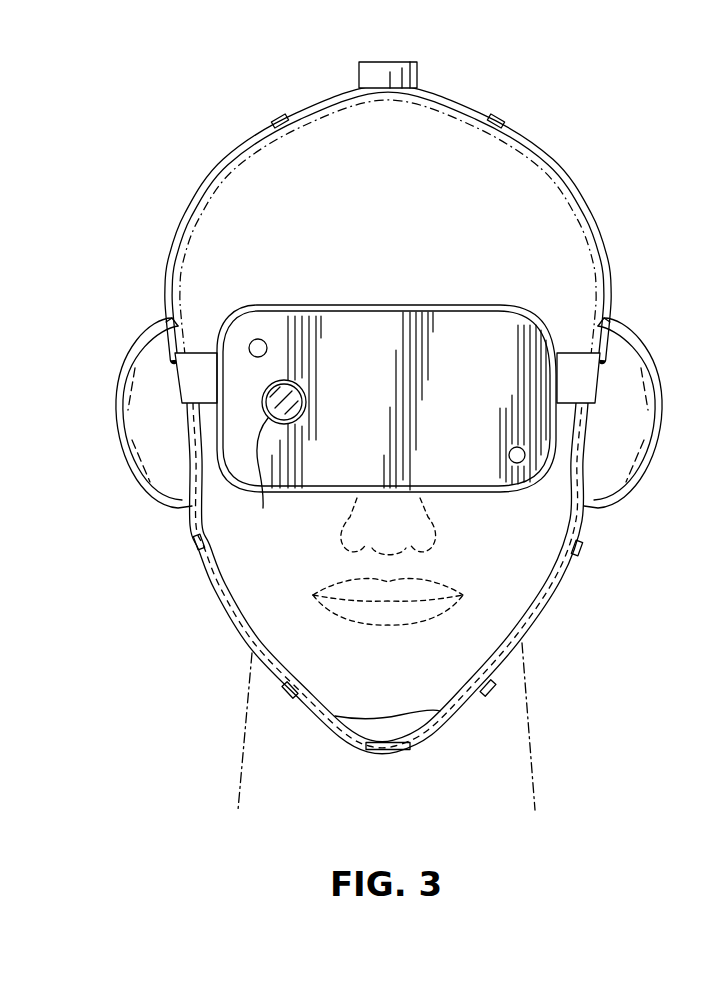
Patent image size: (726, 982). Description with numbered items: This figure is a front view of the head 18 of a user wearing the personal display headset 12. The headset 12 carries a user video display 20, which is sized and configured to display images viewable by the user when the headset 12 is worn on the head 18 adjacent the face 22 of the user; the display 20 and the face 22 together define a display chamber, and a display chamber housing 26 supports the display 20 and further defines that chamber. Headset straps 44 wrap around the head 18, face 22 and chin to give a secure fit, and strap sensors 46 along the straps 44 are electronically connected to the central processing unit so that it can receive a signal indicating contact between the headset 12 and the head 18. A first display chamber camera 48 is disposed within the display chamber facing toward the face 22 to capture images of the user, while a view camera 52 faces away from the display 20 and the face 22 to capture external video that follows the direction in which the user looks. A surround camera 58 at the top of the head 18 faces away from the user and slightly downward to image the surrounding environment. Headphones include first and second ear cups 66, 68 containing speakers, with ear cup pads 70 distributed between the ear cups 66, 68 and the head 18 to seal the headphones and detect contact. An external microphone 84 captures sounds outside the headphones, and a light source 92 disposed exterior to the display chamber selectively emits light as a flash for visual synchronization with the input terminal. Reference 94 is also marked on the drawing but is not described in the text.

The personal display headset 12 is at (474, 322).
The head 18 is at (537, 197).
The user video display 20 is at (450, 458).
The face 22 is at (520, 580).
The display chamber housing 26 is at (536, 303).
The headset straps 44 is at (222, 162).
The strap sensors 46 is at (276, 116).
The first display chamber camera 48 is at (578, 547).
The view camera 52 is at (276, 460).
The surround camera 58 is at (390, 62).
The first ear cup 66 is at (640, 365).
The second ear cup 68 is at (150, 358).
The ear cup pads 70 is at (170, 316).
The external microphone 84 is at (526, 461).
The light source 92 is at (256, 339).
The strap padding 94 is at (218, 614).